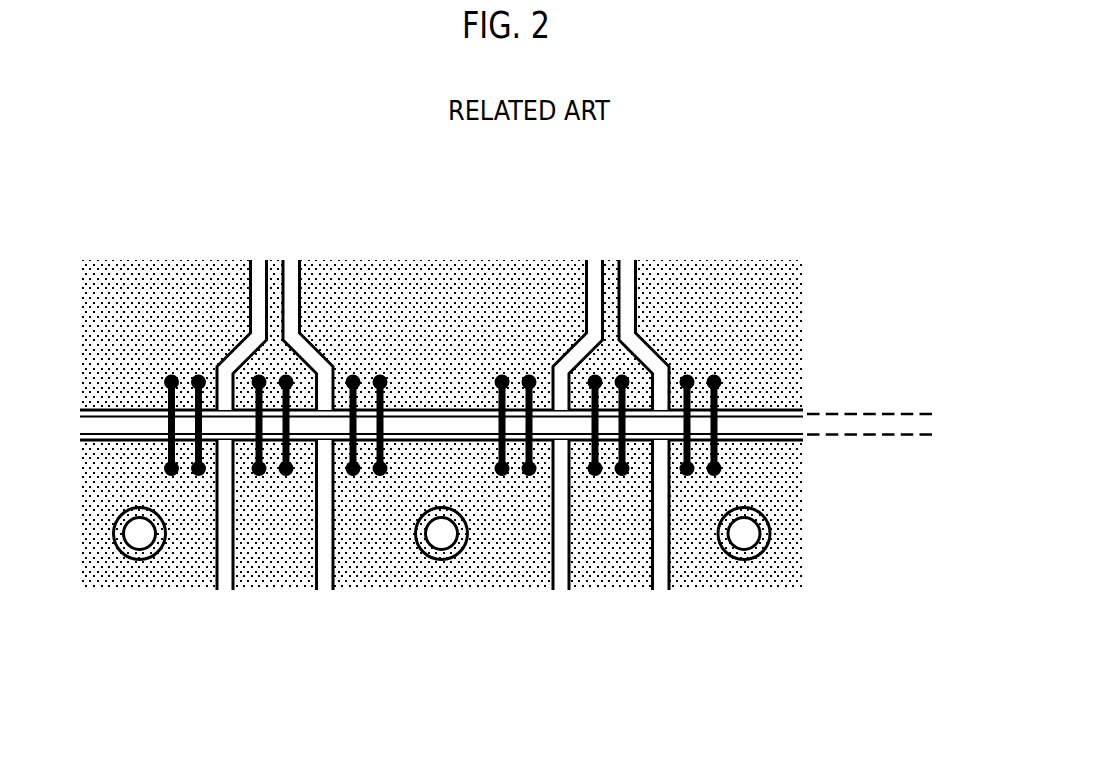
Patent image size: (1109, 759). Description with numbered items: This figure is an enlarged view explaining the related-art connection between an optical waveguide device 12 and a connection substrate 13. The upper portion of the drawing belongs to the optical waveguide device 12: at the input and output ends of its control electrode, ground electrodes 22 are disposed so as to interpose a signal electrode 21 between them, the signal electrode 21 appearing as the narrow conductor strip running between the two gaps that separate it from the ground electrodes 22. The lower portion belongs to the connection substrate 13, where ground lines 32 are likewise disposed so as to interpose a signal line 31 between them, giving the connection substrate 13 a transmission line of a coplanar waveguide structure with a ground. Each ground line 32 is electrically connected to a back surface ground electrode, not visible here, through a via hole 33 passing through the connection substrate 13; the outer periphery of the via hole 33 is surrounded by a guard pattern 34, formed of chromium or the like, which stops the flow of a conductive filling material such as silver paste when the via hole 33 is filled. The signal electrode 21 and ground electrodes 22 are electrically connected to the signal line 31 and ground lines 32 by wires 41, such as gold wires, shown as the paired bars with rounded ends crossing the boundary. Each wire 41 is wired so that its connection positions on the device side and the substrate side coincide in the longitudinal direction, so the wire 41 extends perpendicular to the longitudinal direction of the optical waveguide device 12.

The optical waveguide device 12 is at (935, 412).
The connection substrate 13 is at (935, 436).
The signal electrode 21 is at (610, 282).
The ground electrode 22 is at (684, 282).
The signal line 31 is at (629, 573).
The ground line 32 is at (713, 573).
The via hole 33 is at (747, 540).
The guard pattern 34 is at (770, 533).
The wire 41 is at (737, 393).